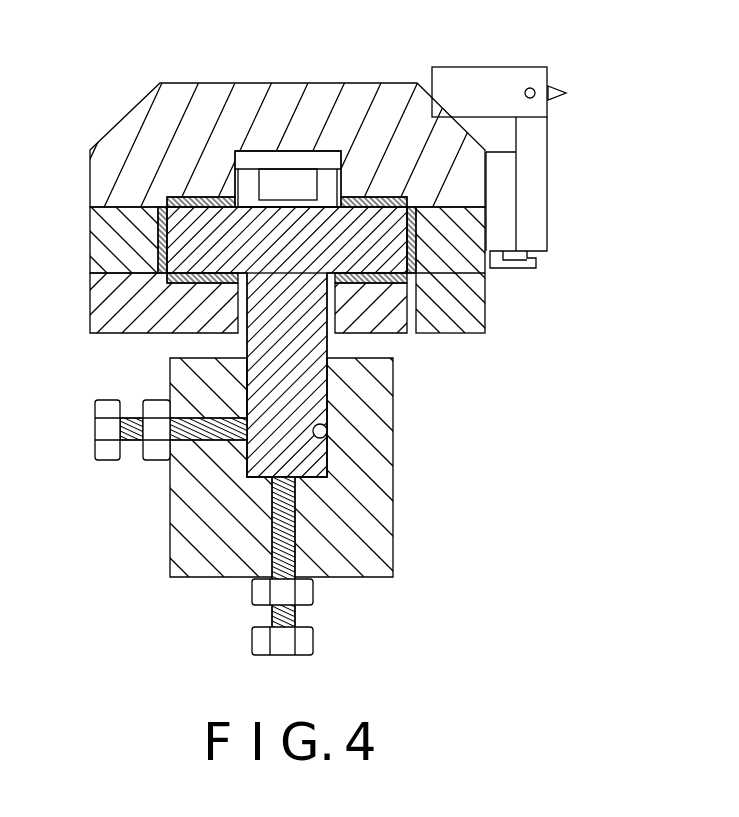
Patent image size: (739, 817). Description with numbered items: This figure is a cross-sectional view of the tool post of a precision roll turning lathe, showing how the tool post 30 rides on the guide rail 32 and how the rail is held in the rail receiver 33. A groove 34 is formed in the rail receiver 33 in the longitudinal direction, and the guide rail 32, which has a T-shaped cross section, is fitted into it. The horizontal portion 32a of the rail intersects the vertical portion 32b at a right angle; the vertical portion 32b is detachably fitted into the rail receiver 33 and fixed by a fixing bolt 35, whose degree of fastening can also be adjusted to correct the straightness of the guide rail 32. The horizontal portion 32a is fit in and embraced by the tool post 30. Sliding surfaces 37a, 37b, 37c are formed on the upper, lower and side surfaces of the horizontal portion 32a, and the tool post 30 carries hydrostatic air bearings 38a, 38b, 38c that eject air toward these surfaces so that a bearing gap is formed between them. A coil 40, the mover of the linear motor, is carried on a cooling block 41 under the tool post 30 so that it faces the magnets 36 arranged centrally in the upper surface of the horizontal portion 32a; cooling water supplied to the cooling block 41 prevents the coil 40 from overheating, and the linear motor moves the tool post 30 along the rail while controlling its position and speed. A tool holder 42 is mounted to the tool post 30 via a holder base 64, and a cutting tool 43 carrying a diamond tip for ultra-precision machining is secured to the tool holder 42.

The tool post 30 is at (307, 198).
The guide rail 32 is at (315, 342).
The horizontal portion 32a is at (385, 257).
The vertical portion 32b is at (263, 341).
The rail receiver 33 is at (375, 521).
The groove 34 is at (327, 435).
The fixing bolt 35 is at (100, 433).
The magnets 36 is at (320, 212).
The sliding surface 37a is at (178, 168).
The sliding surface 37b is at (160, 240).
The sliding surface 37c is at (165, 296).
The hydrostatic air bearing 38a is at (410, 196).
The hydrostatic air bearing 38b is at (420, 225).
The hydrostatic air bearing 38c is at (428, 274).
The coil 40 is at (296, 183).
The cooling block 41 is at (263, 158).
The tool holder 42 is at (526, 165).
The cutting tool 43 is at (556, 88).
The holder base 64 is at (505, 165).